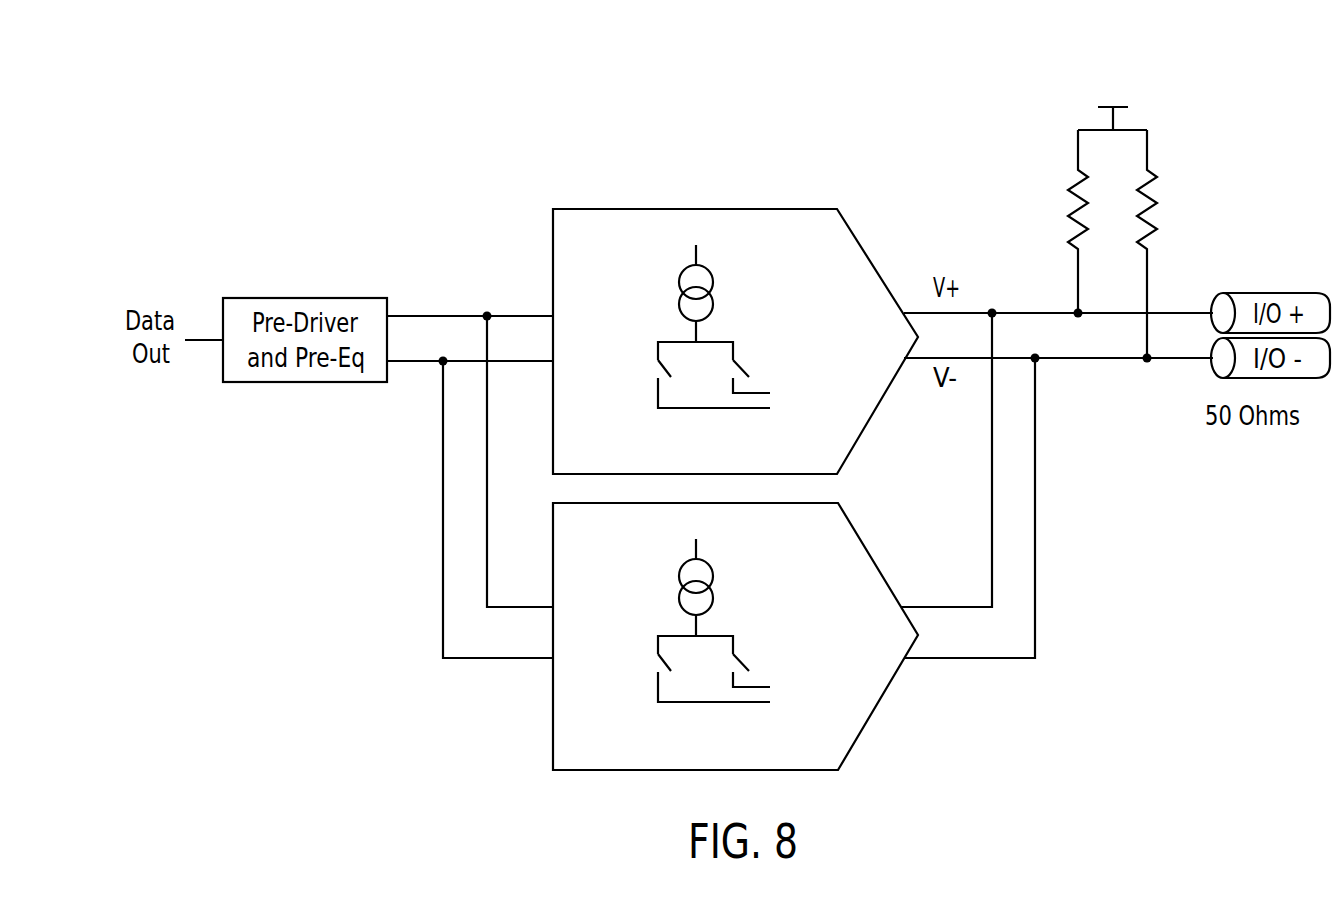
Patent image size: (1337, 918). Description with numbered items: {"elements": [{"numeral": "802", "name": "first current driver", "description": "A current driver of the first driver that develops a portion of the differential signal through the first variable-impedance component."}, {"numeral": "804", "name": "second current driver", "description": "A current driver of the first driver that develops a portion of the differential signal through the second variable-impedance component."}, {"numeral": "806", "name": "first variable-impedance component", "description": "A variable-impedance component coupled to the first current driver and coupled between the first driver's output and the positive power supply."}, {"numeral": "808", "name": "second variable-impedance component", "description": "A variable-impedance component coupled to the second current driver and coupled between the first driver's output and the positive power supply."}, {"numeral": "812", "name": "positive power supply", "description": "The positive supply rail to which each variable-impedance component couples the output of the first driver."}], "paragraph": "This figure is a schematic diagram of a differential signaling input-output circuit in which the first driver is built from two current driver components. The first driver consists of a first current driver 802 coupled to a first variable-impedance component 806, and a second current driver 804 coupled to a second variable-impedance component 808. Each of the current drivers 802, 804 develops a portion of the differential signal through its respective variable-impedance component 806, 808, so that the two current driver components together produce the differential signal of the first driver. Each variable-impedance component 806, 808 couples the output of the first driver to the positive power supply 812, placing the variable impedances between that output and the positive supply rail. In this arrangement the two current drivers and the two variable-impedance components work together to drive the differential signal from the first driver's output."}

The first I-Driver (current driver) 802 is at (723, 457).
The second I-Driver (current driver) 804 is at (723, 751).
The termination resistor (V+) 806 is at (1068, 185).
The termination resistor (V-) 808 is at (1158, 188).
The power supply 812 is at (1070, 47).